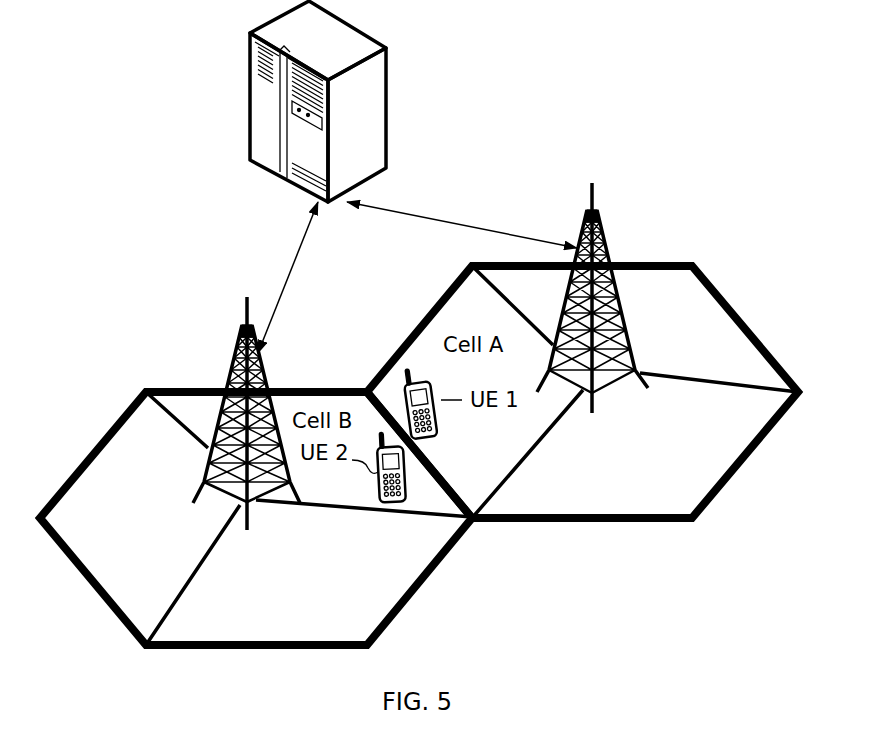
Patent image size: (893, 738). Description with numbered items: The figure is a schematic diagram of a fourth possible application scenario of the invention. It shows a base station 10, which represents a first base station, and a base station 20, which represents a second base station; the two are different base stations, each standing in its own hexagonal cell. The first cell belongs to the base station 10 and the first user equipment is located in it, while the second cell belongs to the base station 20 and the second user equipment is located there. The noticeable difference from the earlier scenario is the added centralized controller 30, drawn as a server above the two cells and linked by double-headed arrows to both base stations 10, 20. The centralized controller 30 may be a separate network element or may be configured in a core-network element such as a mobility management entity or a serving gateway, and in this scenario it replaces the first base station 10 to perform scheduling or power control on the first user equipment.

The base station 10 is at (594, 208).
The base station 20 is at (244, 330).
The centralized controller 30 is at (378, 39).